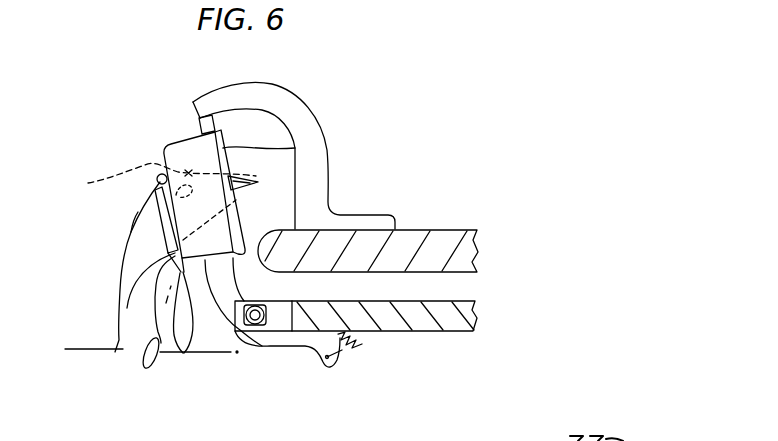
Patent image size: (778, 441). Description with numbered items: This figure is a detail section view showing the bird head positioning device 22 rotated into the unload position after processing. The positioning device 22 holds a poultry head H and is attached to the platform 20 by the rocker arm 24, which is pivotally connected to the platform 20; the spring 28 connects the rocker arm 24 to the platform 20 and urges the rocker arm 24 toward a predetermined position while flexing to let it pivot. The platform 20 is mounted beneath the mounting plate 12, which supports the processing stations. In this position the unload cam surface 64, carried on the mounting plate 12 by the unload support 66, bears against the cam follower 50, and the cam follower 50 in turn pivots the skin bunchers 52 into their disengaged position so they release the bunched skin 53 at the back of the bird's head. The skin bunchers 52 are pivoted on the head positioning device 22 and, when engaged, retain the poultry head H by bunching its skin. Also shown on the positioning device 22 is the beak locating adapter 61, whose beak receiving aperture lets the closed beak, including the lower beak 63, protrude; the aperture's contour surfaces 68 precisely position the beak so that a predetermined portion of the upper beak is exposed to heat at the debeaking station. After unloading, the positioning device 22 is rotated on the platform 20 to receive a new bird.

The mounting plate 12 is at (432, 247).
The platform 20 is at (363, 317).
The bird head positioning device 22 is at (164, 145).
The rocker arm 24 is at (262, 348).
The spring 28 is at (360, 340).
The cam follower 50 is at (216, 118).
The skin bunchers 52 is at (173, 210).
The bunched skin 53 is at (138, 212).
The beak locating adapter 61 is at (295, 148).
The lower beak 63 is at (258, 182).
The unload cam surface 64 is at (200, 125).
The unload support 66 is at (307, 123).
The contour surfaces 68 is at (153, 179).
The poultry head H is at (127, 265).